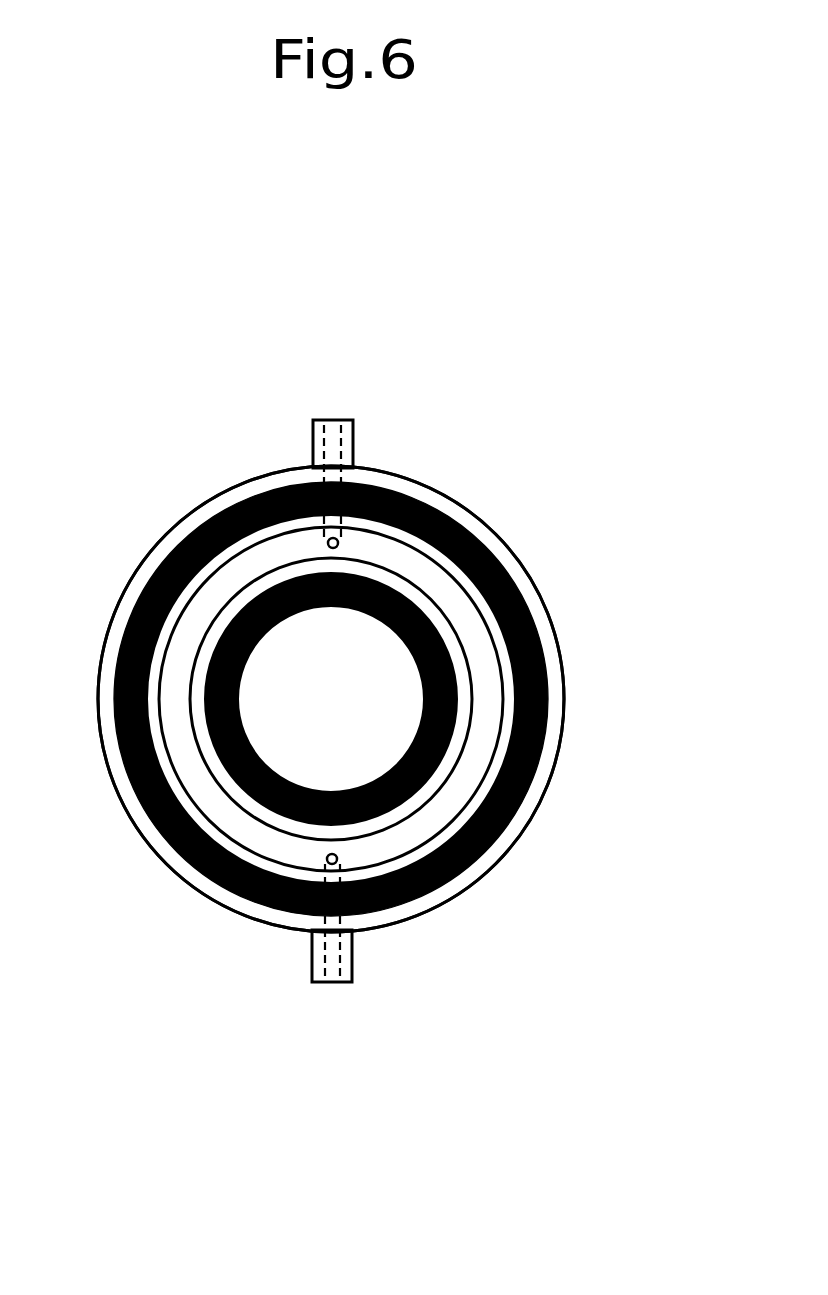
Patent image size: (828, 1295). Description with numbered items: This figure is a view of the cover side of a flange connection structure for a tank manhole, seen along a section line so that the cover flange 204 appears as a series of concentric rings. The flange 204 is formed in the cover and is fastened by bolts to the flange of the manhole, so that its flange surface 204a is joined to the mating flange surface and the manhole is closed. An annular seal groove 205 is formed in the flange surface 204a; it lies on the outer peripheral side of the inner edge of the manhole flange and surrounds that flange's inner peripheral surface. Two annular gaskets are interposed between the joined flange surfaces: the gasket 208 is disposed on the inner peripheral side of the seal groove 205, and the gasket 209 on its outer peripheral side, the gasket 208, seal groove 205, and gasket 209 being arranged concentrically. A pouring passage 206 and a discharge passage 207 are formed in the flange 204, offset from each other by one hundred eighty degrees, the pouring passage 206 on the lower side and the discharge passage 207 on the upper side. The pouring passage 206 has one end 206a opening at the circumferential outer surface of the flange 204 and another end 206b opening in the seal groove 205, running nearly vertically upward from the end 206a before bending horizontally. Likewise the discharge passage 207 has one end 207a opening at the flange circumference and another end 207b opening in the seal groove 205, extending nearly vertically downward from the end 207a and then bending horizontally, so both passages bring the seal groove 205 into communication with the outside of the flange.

The flange 204 is at (512, 548).
The flange surface 204a is at (538, 618).
The annular seal groove 205 is at (392, 548).
The pouring passage 206 is at (307, 927).
The one end of pouring passage 206a is at (333, 982).
The other end of pouring passage 206b is at (327, 858).
The discharge passage 207 is at (300, 474).
The one end of discharge passage 207a is at (333, 420).
The other end of discharge passage 207b is at (328, 543).
The annular gasket 208 is at (460, 737).
The annular gasket 209 is at (550, 692).